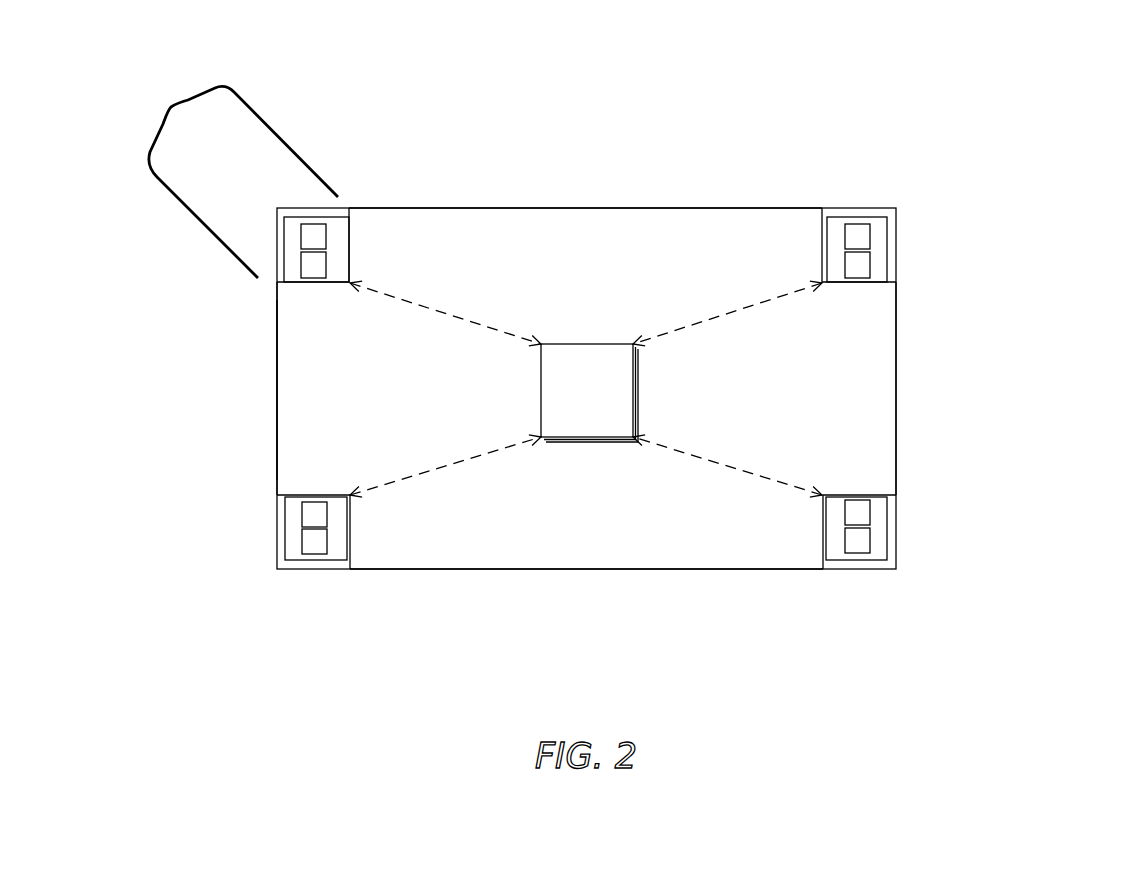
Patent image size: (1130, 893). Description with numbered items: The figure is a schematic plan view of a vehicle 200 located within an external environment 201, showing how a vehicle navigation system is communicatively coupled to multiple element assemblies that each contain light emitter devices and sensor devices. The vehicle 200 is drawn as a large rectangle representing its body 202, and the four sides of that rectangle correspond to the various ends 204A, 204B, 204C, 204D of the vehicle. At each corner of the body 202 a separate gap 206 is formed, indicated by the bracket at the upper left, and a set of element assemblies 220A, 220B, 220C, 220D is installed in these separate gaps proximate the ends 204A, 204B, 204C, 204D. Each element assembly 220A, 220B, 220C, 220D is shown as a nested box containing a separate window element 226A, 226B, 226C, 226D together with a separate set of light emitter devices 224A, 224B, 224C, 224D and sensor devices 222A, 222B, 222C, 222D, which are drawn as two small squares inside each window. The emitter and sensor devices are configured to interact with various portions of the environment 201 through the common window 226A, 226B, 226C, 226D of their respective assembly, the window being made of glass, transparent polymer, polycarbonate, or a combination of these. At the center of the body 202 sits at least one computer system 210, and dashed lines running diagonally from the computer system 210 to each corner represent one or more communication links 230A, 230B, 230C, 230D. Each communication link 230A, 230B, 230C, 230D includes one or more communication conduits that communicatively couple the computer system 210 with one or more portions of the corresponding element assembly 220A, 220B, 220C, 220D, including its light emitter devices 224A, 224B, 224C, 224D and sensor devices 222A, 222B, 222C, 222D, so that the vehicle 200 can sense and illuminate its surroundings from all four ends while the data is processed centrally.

The vehicle 200 is at (836, 401).
The external environment 201 is at (1067, 96).
The body 202 is at (262, 451).
The end of the vehicle 204A is at (920, 382).
The end of the vehicle 204B is at (247, 392).
The end of the vehicle 204C is at (712, 612).
The end of the vehicle 204D is at (705, 152).
The gap 206 is at (242, 177).
The computer system 210 is at (603, 400).
The element assembly 220A is at (878, 182).
The element assembly 220B is at (874, 598).
The element assembly 220C is at (294, 594).
The element assembly 220D is at (288, 178).
The sensor device 222A is at (836, 232).
The sensor device 222B is at (832, 543).
The sensor device 222C is at (342, 545).
The sensor device 222D is at (340, 232).
The light emitter device 224A is at (836, 267).
The light emitter device 224B is at (832, 506).
The light emitter device 224C is at (342, 507).
The light emitter device 224D is at (340, 267).
The window element 226A is at (906, 228).
The window element 226B is at (908, 547).
The window element 226C is at (264, 548).
The window element 226D is at (262, 246).
The communication link 230A is at (710, 303).
The communication link 230B is at (700, 476).
The communication link 230C is at (474, 476).
The communication link 230D is at (473, 308).